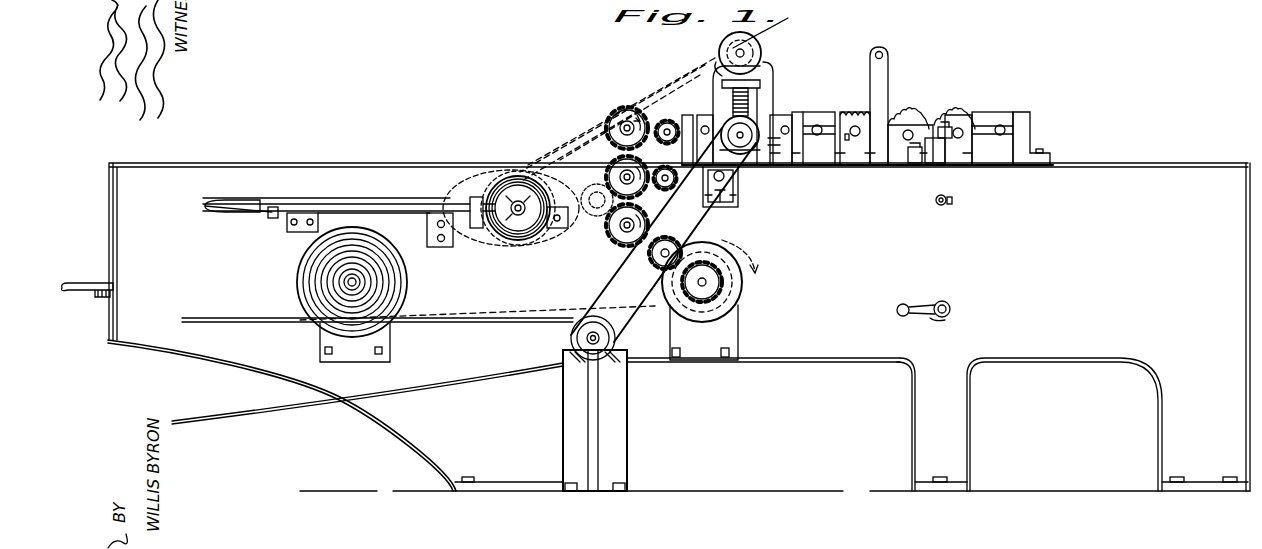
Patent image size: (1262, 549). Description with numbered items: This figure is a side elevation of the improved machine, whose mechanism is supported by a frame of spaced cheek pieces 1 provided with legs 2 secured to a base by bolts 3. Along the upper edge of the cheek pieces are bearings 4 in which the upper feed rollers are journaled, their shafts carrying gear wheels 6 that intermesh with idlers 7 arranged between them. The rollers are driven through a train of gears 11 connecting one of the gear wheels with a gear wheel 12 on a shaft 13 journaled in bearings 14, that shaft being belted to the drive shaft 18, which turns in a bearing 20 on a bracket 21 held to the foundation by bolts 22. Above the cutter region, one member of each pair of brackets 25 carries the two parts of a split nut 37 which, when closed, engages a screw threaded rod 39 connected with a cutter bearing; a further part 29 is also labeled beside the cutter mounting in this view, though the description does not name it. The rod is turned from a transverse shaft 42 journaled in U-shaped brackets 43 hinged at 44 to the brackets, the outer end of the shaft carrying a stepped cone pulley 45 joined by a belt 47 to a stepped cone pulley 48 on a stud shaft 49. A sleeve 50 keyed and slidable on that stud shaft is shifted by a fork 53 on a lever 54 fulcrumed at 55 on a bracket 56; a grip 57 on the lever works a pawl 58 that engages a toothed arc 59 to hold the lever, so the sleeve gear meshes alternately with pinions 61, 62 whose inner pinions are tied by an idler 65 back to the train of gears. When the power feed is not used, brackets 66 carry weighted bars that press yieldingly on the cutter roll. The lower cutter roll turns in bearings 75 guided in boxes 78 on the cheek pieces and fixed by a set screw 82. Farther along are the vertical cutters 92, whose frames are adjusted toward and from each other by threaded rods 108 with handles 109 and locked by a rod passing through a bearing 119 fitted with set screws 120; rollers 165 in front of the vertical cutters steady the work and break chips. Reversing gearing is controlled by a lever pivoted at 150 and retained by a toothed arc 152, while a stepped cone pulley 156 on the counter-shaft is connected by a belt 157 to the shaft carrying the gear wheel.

The cheek pieces 1 is at (1030, 303).
The legs 2 is at (972, 415).
The bolts 3 is at (940, 470).
The bearings 4 is at (673, 106).
The gear wheels 6 is at (666, 155).
The idlers 7 is at (913, 106).
The train of gears 11 is at (612, 134).
The gear wheel 12 is at (738, 290).
The shaft 13 is at (695, 275).
The bearings 14 is at (702, 278).
The drive shaft 18 is at (565, 334).
The bearing 20 is at (663, 235).
The bracket 21 is at (627, 379).
The bolts 22 is at (560, 474).
The brackets 25 is at (768, 106).
The shaft 29 is at (756, 170).
The split nut 37 is at (756, 76).
The screw threaded rod 39 is at (726, 92).
The transverse shaft 42 is at (748, 46).
The U-shaped brackets 43 is at (708, 56).
The hinge 44 is at (783, 147).
The stepped cone pulley 45 is at (774, 30).
The belt 47 is at (650, 86).
The stepped cone pulley 48 is at (510, 190).
The stud shaft 49 is at (510, 210).
The sleeve 50 is at (511, 208).
The fork 53 is at (472, 224).
The lever 54 is at (448, 190).
The fulcrum 55 is at (413, 191).
The bracket 56 is at (420, 220).
The grip 57 is at (204, 210).
The pawl 58 is at (270, 214).
The toothed arc 59 is at (349, 236).
The pinion 61 is at (604, 170).
The pinion 62 is at (472, 190).
The idler 65 is at (610, 220).
The brackets 66 is at (882, 84).
The bearings 75 is at (735, 182).
The boxes 78 is at (740, 208).
The set screw 82 is at (740, 152).
The vertical cutters 92 is at (932, 160).
The threaded rods 108 is at (942, 296).
The handles 109 is at (959, 326).
The bearing 119 is at (930, 198).
The set screws 120 is at (965, 212).
The pivot 150 is at (748, 278).
The toothed arc 152 is at (113, 288).
The stepped cone pulley 156 is at (403, 280).
The belt 157 is at (522, 302).
The rollers 165 is at (893, 162).